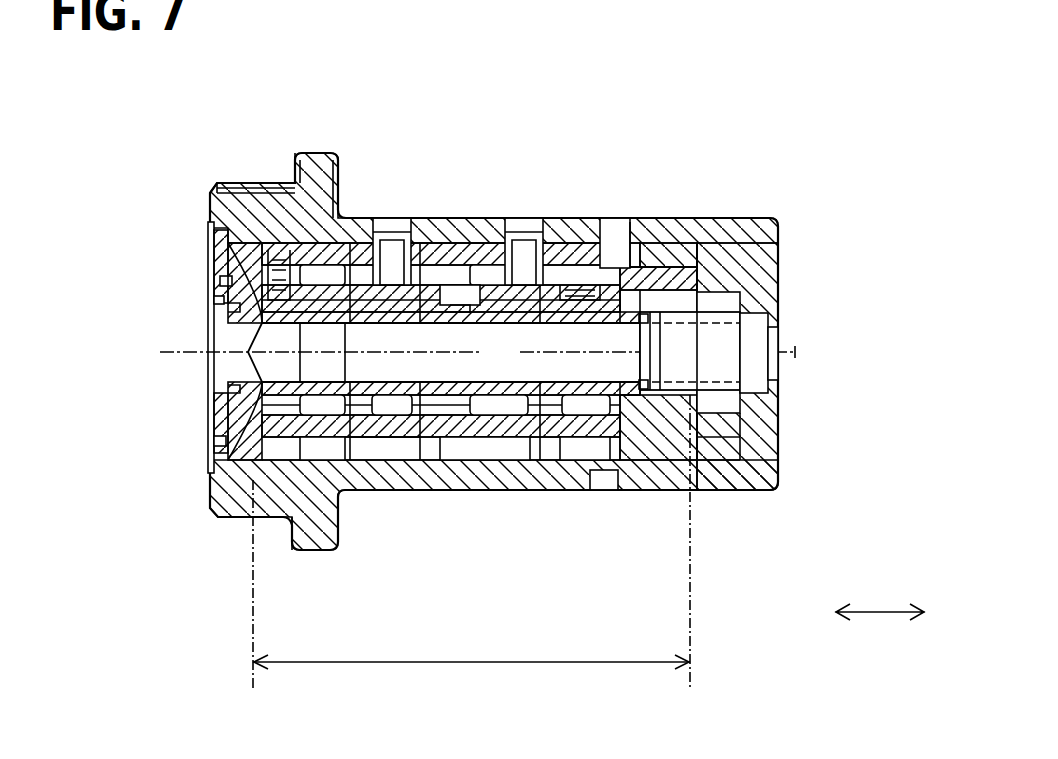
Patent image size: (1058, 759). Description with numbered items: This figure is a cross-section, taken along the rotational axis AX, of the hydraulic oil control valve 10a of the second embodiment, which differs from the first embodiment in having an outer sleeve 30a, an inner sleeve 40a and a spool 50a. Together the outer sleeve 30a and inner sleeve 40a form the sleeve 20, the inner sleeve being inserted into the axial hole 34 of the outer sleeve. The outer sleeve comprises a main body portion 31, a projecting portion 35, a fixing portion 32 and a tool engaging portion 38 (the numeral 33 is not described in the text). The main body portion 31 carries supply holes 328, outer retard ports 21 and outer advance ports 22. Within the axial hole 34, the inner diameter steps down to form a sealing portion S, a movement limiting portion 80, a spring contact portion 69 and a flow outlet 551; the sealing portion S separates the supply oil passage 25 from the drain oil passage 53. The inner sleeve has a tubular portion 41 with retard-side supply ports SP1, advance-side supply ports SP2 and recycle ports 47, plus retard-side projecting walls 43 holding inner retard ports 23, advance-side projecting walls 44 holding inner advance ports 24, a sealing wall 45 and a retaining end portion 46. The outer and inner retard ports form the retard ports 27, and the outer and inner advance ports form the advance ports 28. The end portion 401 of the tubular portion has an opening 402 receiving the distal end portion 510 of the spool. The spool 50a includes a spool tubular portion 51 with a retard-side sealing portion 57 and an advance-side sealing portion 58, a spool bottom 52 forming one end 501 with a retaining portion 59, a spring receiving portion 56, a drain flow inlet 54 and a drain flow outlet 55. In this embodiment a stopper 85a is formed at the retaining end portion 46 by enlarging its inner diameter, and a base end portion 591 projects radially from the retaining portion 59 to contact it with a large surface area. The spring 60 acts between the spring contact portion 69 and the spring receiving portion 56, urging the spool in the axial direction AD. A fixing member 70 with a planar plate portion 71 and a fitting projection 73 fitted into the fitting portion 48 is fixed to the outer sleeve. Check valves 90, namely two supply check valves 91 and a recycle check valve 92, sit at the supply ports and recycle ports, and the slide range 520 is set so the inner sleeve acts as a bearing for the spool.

The hydraulic oil control valve 10a is at (862, 100).
The sleeve 20 is at (858, 128).
The outer sleeve 30a is at (766, 180).
The inner sleeve 40a is at (762, 220).
The advance ports 28 is at (440, 100).
The outer advance ports 22 is at (380, 262).
The inner advance ports 24 is at (415, 262).
The retard ports 27 is at (575, 100).
The inner retard ports 23 is at (520, 262).
The outer retard ports 21 is at (553, 262).
The supply oil passage 25 is at (618, 258).
The sealing portion S is at (660, 230).
The fixing portion 32 is at (701, 218).
The end wall 33 is at (731, 218).
The axial hole 34 is at (645, 262).
The main body portion 31 is at (422, 235).
The supply holes 328 is at (600, 220).
The tool engaging portion 38 is at (240, 183).
The retard-side supply ports SP1 is at (590, 272).
The advance-side supply ports SP2 is at (290, 245).
The projecting portion 35 is at (316, 152).
The retaining end portion 46 is at (212, 220).
The sealing wall 45 is at (250, 240).
The advance-side projecting walls 44 is at (340, 270).
The retard-side projecting walls 43 is at (482, 260).
The recycle ports 47 is at (448, 262).
The fixing member 70 is at (205, 232).
The stopper 85a is at (207, 283).
The planar plate portion 71 is at (209, 262).
The retaining portion 59 is at (207, 300).
The drain flow outlet 55 is at (255, 330).
The drain flow inlet 54 is at (443, 325).
The drain oil passage 53 is at (547, 352).
The spool 50a is at (165, 360).
The spool bottom 52 is at (233, 370).
The one end 501 is at (200, 402).
The base end portion 591 is at (217, 422).
The fitting portion 48 is at (215, 440).
The fitting projection 73 is at (221, 508).
The advance-side sealing portion 58 is at (370, 407).
The spool tubular portion 51 is at (447, 420).
The tubular portion 41 is at (413, 420).
The retard-side sealing portion 57 is at (497, 440).
The spring receiving portion 56 is at (630, 445).
The opening 402 is at (697, 480).
The end portion 401 is at (723, 480).
The supply check valves 91 is at (347, 490).
The recycle check valve 92 is at (490, 487).
The check valves 90 is at (395, 600).
The slide range 520 is at (471, 558).
The axial direction AD is at (880, 597).
The rotational axis AX is at (813, 353).
The flow outlet 551 is at (780, 338).
The distal end portion 510 is at (708, 262).
The spring contact portion 69 is at (747, 390).
The spring 60 is at (753, 417).
The movement limiting portion 80 is at (777, 473).